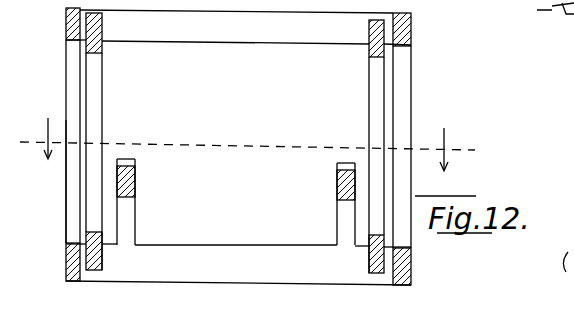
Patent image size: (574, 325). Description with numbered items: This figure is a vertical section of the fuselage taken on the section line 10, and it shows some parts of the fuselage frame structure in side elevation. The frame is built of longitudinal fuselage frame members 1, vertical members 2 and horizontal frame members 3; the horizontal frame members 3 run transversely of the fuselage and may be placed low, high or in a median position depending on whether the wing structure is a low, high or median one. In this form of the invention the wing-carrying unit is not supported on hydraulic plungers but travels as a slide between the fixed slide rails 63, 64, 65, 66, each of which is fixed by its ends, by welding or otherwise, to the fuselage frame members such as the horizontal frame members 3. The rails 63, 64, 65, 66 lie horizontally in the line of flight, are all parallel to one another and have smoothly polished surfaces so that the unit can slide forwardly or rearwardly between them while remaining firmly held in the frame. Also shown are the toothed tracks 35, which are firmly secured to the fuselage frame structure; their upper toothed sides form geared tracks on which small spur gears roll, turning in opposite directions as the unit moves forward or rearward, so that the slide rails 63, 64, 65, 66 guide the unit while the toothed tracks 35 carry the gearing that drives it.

The longitudinal fuselage frame member 1 is at (70, 22).
The vertical frame member 2 is at (67, 188).
The horizontal frame member 3 is at (235, 43).
The section line 10 is at (247, 139).
The toothed track 35 is at (135, 164).
The fixed slide rail 63 is at (104, 24).
The fixed slide rail 64 is at (368, 25).
The fixed slide rail 65 is at (102, 262).
The fixed slide rail 66 is at (368, 256).